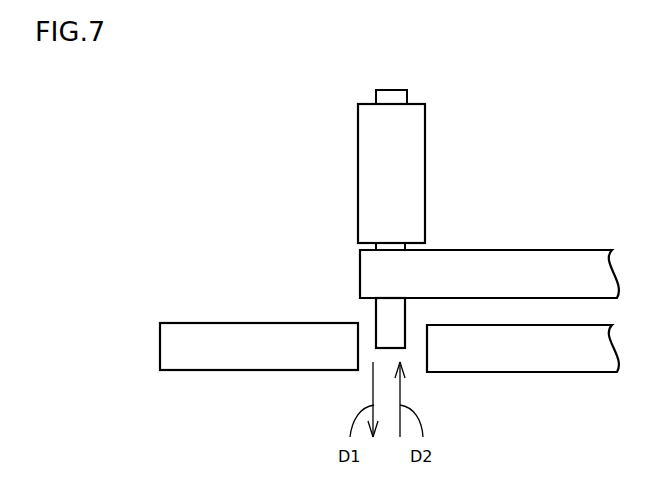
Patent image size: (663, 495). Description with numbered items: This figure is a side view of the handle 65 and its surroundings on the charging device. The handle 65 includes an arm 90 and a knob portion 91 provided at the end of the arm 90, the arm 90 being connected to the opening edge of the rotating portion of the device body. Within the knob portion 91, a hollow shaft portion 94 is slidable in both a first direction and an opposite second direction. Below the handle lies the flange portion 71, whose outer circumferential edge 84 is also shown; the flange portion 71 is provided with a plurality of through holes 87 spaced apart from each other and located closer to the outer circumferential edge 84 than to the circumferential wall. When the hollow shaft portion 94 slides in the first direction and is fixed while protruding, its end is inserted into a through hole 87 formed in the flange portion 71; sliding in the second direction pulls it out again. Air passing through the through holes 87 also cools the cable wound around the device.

The handle 65 is at (488, 193).
The knob portion 91 is at (432, 170).
The arm 90 is at (514, 275).
The hollow shaft portion 94 is at (389, 323).
The outer circumferential edge 84 is at (158, 353).
The flange portion 71 is at (525, 352).
The through hole 87 is at (428, 356).